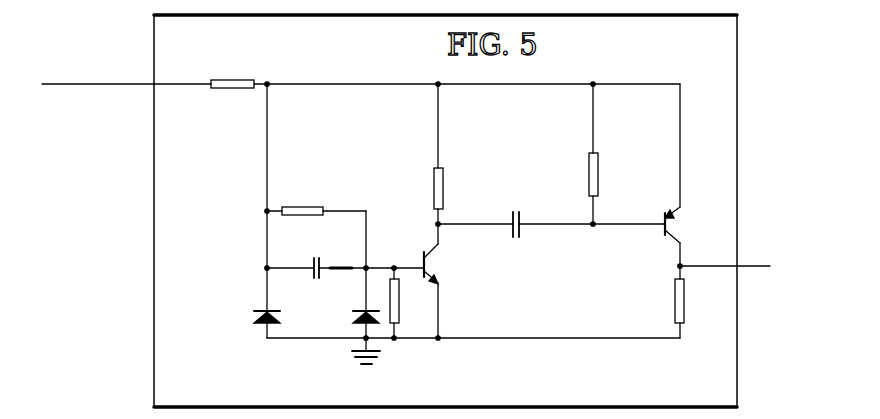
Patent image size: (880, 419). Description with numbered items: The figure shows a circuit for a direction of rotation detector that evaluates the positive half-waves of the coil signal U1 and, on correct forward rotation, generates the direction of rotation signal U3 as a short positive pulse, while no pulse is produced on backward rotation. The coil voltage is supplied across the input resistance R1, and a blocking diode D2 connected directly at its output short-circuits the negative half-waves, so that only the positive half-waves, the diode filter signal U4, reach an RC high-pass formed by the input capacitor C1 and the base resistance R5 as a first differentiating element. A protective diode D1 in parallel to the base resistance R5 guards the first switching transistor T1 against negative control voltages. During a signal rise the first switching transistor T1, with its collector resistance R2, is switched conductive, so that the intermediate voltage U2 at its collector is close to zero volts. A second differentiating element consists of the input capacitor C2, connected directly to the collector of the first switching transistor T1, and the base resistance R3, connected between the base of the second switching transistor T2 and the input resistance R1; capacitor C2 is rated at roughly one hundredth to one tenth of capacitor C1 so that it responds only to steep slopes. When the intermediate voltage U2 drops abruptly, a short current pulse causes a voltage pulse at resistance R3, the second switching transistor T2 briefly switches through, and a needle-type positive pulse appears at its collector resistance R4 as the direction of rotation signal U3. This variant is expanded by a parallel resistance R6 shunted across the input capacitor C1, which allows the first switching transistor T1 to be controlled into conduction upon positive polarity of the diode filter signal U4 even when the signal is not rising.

The coil signal U1 is at (126, 97).
The input resistance R1 is at (235, 69).
The diode filter signal U4 is at (319, 97).
The parallel resistance R6 is at (305, 195).
The collector resistance R2 is at (417, 188).
The input capacitor C1 is at (327, 253).
The blocking diode D2 is at (285, 303).
The protective diode D1 is at (345, 323).
The base resistance R5 is at (413, 301).
The first switching transistor T1 is at (447, 266).
The intermediate voltage U2 is at (475, 236).
The input capacitor C2 is at (529, 212).
The base resistance R3 is at (615, 174).
The second switching transistor T2 is at (693, 225).
The collector resistance R4 is at (699, 301).
The direction of rotation signal U3 is at (744, 277).